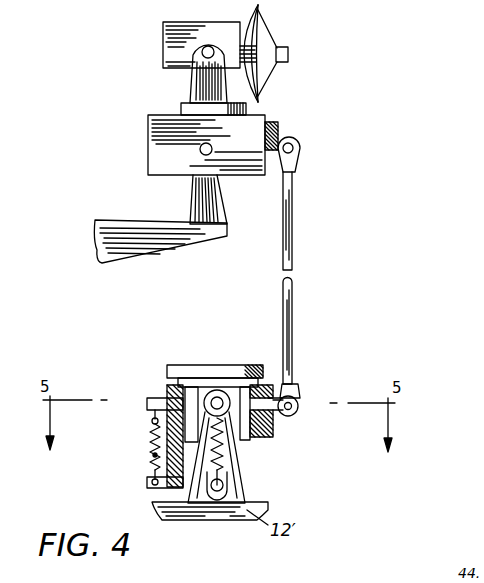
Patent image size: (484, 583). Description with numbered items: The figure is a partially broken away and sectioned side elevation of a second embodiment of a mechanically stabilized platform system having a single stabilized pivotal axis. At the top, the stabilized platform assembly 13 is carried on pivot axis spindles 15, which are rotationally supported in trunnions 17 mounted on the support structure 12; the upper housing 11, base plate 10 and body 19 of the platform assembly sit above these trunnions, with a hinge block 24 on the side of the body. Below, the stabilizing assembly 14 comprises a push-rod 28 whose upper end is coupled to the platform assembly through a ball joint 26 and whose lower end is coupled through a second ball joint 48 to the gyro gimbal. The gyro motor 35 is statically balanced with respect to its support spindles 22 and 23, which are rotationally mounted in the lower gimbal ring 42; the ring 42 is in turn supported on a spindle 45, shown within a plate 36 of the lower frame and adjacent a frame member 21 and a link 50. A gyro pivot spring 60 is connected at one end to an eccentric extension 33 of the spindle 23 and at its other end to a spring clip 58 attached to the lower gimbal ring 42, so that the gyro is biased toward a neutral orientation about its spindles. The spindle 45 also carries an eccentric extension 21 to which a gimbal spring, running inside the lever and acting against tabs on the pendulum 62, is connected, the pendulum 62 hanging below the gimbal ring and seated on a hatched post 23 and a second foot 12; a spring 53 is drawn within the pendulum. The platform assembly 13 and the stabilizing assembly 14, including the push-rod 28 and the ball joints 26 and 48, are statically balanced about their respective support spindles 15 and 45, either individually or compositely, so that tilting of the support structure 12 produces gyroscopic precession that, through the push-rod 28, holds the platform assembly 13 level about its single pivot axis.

The base plate 10 is at (176, 110).
The lamp housing 11 is at (194, 81).
The support structure 12 is at (98, 230).
The stabilized platform assembly 13 is at (375, 105).
The stabilizing assembly 14 is at (378, 477).
The pivot axis spindles 15 is at (200, 151).
The trunnions 17 is at (195, 196).
The housing 19 is at (168, 130).
The eccentric extension 21 is at (198, 420).
The support spindle 22 is at (297, 402).
The support spindle 23 is at (170, 388).
The hinge 24 is at (273, 130).
The ball joint 26 is at (300, 149).
The push-rod 28 is at (292, 290).
The eccentric extension 33 is at (148, 402).
The gyro motor 35 is at (152, 456).
The plate 36 is at (178, 365).
The lower gimbal ring 42 is at (266, 440).
The spindle 45 is at (226, 395).
The ball joint 48 is at (296, 392).
The link 50 is at (268, 398).
The spring 53 is at (222, 452).
The spring clip 58 is at (150, 485).
The gyro pivot spring 60 is at (150, 440).
The pendulum 62 is at (232, 480).